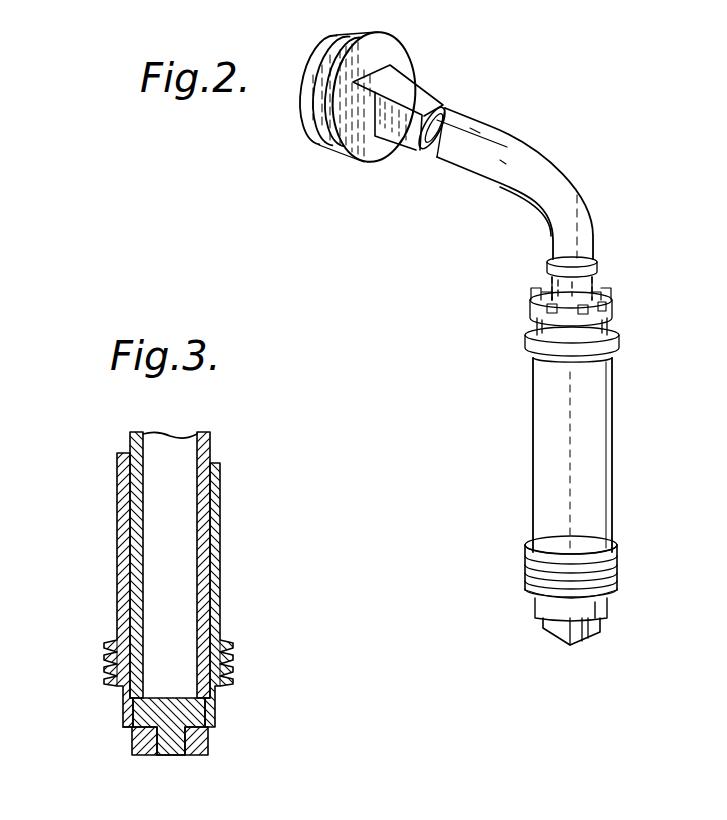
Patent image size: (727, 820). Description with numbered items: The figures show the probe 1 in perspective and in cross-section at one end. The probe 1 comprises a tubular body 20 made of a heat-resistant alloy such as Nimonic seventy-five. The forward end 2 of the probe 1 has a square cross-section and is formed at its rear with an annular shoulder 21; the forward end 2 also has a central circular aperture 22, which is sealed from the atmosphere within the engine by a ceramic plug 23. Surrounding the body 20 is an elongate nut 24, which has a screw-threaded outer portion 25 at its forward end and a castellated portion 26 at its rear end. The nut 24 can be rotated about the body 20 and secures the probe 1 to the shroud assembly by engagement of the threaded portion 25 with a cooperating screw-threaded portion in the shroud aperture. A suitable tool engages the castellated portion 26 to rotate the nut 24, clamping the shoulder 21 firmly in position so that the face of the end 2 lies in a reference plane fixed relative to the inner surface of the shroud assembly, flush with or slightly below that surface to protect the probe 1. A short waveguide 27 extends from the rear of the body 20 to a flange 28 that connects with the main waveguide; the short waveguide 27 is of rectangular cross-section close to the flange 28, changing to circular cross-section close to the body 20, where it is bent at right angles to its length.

In FIG. 2, the probe 1 is at (526, 452).
In FIG. 3, the probe 1 is at (174, 617).
In FIG. 2, the forward end 2 is at (548, 622).
In FIG. 3, the forward end 2 is at (200, 742).
In FIG. 3, the tubular body 20 is at (200, 525).
In FIG. 3, the annular shoulder 21 is at (123, 728).
In FIG. 3, the central circular aperture 22 is at (170, 755).
In FIG. 3, the ceramic plug 23 is at (190, 710).
In FIG. 2, the elongate nut 24 is at (548, 462).
In FIG. 3, the elongate nut 24 is at (122, 575).
In FIG. 2, the screw-threaded outer portion 25 is at (530, 577).
In FIG. 3, the screw-threaded outer portion 25 is at (230, 662).
In FIG. 2, the castellated portion 26 is at (530, 305).
In FIG. 2, the short waveguide 27 is at (542, 167).
In FIG. 2, the flange 28 is at (380, 41).